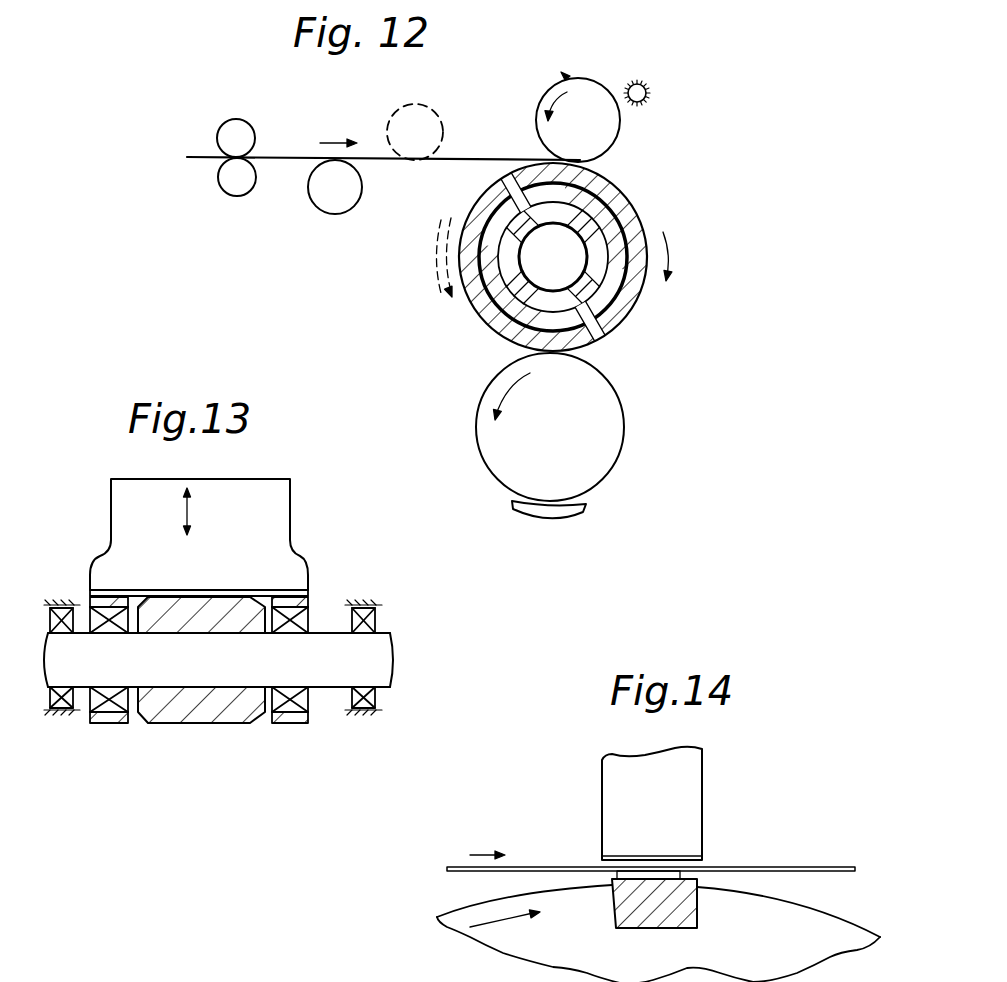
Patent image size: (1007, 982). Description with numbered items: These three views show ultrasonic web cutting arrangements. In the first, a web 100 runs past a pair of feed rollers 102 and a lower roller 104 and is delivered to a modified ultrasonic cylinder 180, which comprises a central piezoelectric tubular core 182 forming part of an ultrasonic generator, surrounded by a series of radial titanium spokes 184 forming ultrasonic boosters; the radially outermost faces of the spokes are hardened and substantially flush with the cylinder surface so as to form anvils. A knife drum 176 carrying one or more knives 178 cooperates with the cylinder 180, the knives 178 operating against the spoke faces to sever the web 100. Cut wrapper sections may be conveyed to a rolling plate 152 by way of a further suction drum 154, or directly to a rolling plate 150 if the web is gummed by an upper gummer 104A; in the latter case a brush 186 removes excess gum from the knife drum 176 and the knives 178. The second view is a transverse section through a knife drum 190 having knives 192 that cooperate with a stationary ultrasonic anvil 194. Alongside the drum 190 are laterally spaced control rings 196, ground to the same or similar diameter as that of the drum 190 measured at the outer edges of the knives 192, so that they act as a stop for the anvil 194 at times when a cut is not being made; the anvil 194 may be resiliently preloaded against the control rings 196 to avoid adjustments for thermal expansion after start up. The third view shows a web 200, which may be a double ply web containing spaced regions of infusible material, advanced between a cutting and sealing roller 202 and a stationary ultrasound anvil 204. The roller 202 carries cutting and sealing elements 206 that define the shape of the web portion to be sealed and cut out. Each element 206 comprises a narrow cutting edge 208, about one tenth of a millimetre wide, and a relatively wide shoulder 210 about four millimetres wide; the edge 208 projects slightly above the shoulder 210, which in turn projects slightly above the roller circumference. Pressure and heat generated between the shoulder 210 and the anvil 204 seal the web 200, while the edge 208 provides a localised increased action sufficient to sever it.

In FIG. 12, the web 100 is at (441, 163).
In FIG. 12, the feed rollers 102 is at (249, 125).
In FIG. 12, the guide roller 104 is at (333, 205).
In FIG. 12, the upper gummer 104A is at (433, 107).
In FIG. 12, the rolling plate 150 is at (453, 298).
In FIG. 12, the rolling plate 152 is at (583, 510).
In FIG. 12, the further suction drum 154 is at (624, 420).
In FIG. 12, the knife drum 176 is at (608, 137).
In FIG. 12, the knives 178 is at (563, 80).
In FIG. 12, the modified ultrasonic cylinder 180 is at (566, 259).
In FIG. 12, the central piezoelectric tubular core 182 is at (590, 230).
In FIG. 12, the radial titanium spokes 184 is at (481, 306).
In FIG. 12, the brush 186 is at (650, 93).
In FIG. 13, the knife drum 190 is at (247, 705).
In FIG. 13, the knives 192 is at (273, 588).
In FIG. 13, the stationary ultrasonic anvil 194 is at (285, 516).
In FIG. 13, the control rings 196 is at (112, 600).
In FIG. 14, the web 200 is at (470, 873).
In FIG. 14, the cutting and sealing roller 202 is at (779, 960).
In FIG. 14, the stationary ultrasound anvil 204 is at (675, 804).
In FIG. 14, the cutting and sealing elements 206 is at (628, 921).
In FIG. 14, the narrow cutting edge 208 is at (596, 868).
In FIG. 14, the relatively wide shoulder 210 is at (699, 859).